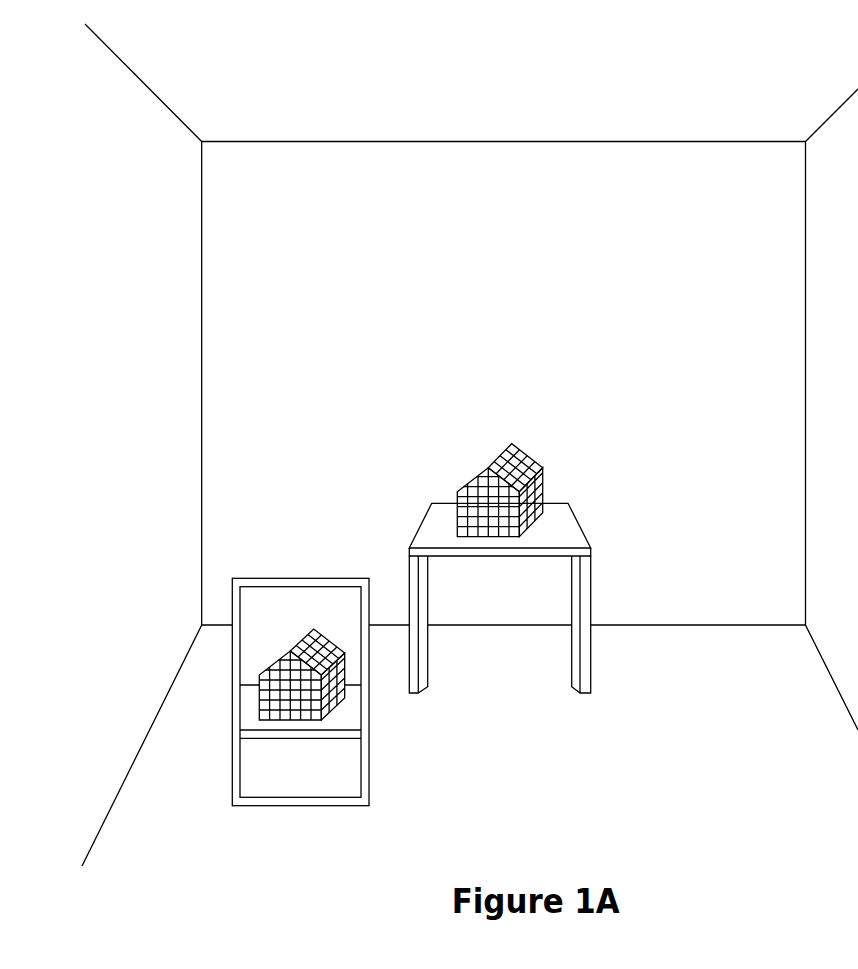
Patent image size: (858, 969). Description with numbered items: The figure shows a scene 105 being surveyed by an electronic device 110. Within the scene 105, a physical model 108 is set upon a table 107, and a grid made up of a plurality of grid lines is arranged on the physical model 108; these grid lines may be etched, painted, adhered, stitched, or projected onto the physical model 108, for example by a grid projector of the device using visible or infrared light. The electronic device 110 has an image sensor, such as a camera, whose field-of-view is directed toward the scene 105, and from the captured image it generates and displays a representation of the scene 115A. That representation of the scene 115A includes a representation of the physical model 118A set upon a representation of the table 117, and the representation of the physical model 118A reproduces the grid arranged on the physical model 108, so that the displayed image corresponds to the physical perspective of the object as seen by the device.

The scene 105 is at (791, 122).
The table 107 is at (568, 532).
The physical model 108 is at (510, 442).
The electronic device 110 is at (338, 677).
The representation of the scene 115A is at (302, 617).
The representation of the table 117 is at (343, 717).
The representation of the physical model 118A is at (345, 667).